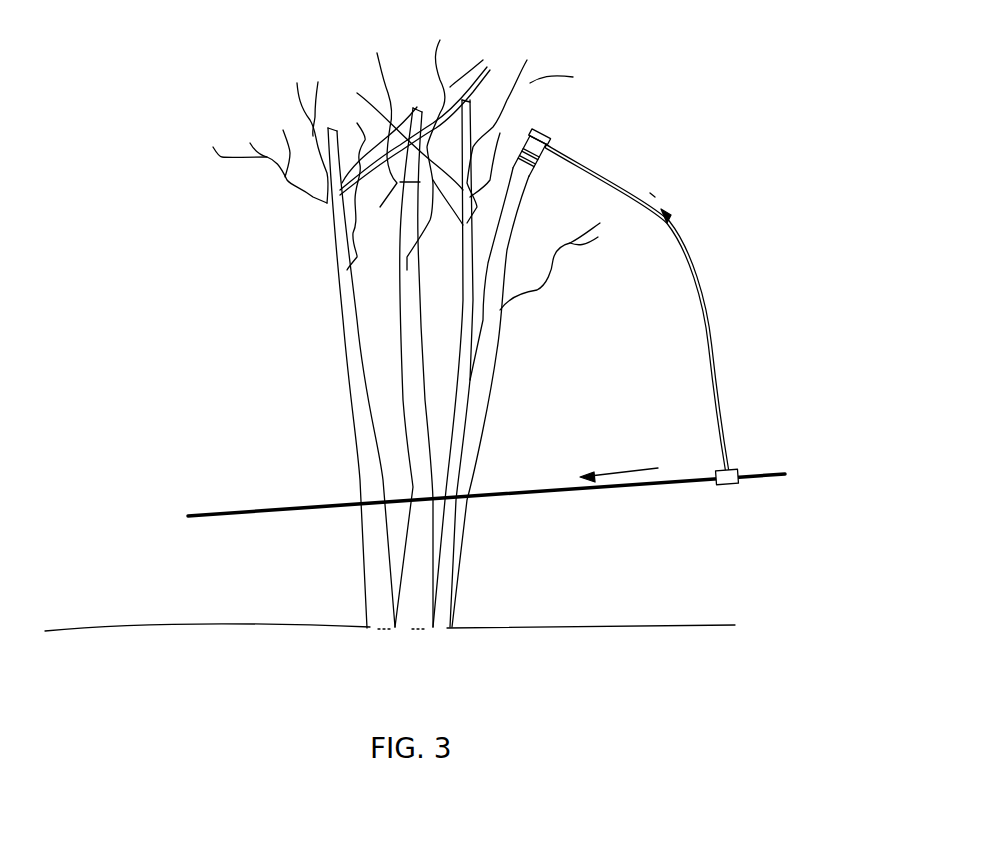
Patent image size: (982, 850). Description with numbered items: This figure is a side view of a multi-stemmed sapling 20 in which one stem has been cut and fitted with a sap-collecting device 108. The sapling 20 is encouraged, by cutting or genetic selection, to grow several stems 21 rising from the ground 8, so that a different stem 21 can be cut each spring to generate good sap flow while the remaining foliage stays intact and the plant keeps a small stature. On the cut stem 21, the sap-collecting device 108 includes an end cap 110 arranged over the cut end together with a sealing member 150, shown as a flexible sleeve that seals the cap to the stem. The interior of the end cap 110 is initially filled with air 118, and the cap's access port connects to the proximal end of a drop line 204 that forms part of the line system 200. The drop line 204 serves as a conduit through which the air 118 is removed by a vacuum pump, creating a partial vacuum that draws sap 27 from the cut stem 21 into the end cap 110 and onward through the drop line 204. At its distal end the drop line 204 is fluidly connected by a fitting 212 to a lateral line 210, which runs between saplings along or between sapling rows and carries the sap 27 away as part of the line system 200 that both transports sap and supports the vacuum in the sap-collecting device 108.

The ground 8 is at (627, 627).
The sapling 20 is at (443, 465).
The stem 21 is at (547, 340).
The sap 27 is at (628, 467).
The air 118 is at (650, 193).
The sap-collecting device 108 is at (546, 122).
The end cap 110 is at (547, 143).
The sealing member 150 is at (531, 174).
The line system 200 is at (750, 385).
The drop line 204 is at (680, 227).
The lateral line 210 is at (607, 497).
The fitting 212 is at (735, 487).